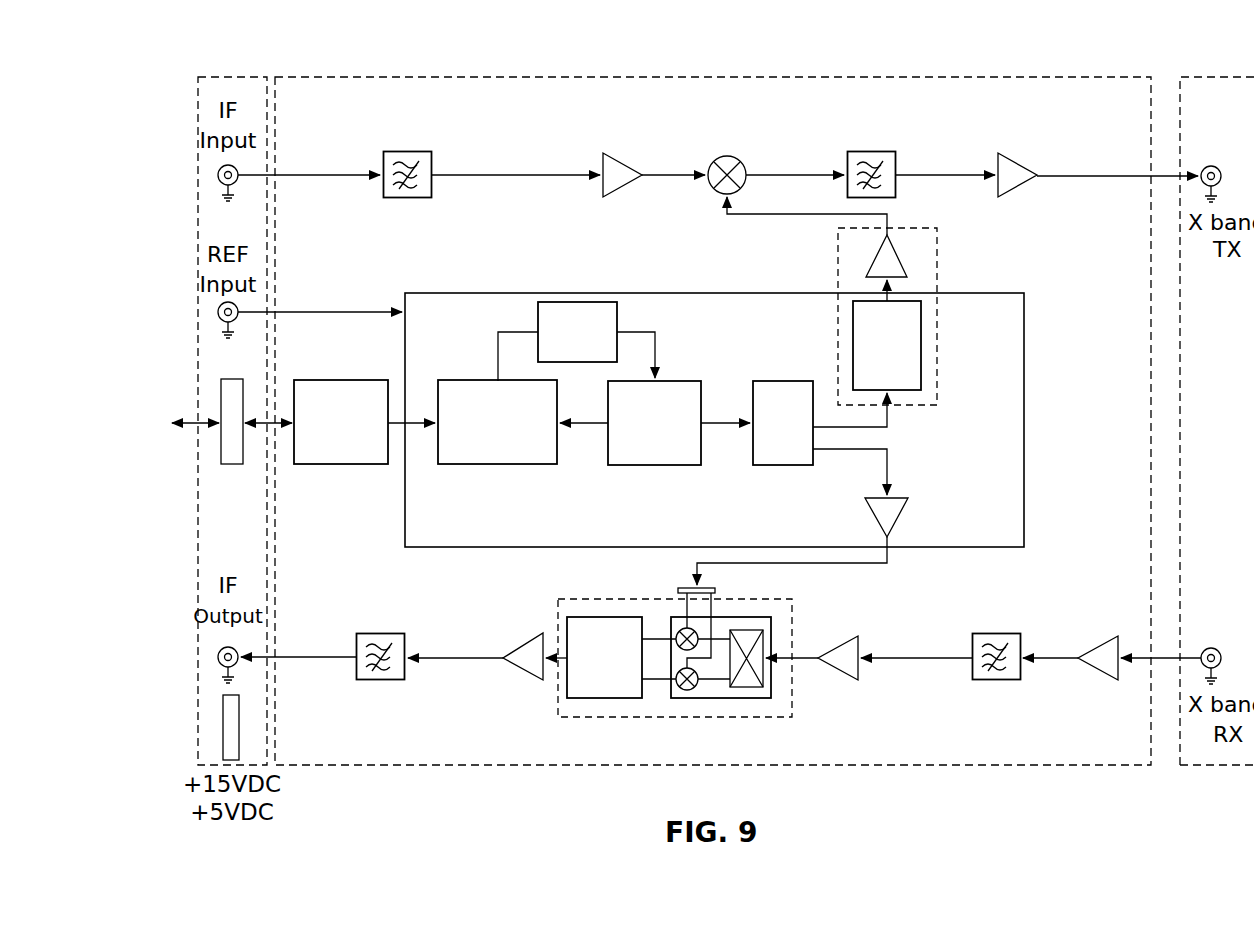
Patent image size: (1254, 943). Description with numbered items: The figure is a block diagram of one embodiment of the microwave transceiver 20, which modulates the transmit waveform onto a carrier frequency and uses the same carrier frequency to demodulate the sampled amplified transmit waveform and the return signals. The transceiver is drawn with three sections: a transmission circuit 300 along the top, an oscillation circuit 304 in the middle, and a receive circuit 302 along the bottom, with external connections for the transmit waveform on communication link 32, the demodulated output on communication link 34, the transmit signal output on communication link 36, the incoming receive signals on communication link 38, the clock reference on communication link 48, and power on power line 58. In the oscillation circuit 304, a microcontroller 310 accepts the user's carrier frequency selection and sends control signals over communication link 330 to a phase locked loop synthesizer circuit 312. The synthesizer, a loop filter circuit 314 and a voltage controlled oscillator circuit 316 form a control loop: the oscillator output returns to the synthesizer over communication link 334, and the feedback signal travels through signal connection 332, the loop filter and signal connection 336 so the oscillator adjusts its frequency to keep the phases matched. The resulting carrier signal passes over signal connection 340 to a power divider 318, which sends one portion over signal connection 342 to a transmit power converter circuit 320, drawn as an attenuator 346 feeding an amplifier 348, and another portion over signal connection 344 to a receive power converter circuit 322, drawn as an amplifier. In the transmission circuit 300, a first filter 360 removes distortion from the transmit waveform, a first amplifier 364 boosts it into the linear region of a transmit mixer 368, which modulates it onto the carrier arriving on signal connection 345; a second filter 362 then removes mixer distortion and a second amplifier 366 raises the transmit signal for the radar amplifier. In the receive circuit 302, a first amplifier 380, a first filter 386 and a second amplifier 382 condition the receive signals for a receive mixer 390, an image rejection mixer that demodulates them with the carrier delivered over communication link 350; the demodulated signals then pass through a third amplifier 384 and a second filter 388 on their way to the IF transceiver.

The microwave transceiver 20 is at (914, 56).
The communication link 32 is at (218, 172).
The communication link 34 is at (218, 654).
The communication link 36 is at (1213, 165).
The communication link 38 is at (1213, 648).
The communication link 48 is at (218, 309).
The power line 58 is at (223, 715).
The transmission circuit 300 is at (467, 128).
The receive circuit 302 is at (919, 683).
The oscillation circuit 304 is at (461, 292).
The microcontroller 310 is at (350, 380).
The phase locked loop synthesizer circuit 312 is at (480, 380).
The loop filter circuit 314 is at (584, 300).
The voltage controlled oscillator circuit 316 is at (664, 467).
The power divider 318 is at (785, 381).
The transmit power converter circuit 320 is at (945, 290).
The receive power converter circuit 322 is at (895, 500).
The communication link 330 is at (405, 430).
The signal connection 332 is at (515, 332).
The communication link 334 is at (585, 428).
The signal connection 336 is at (640, 332).
The signal connection 340 is at (726, 428).
The signal connection 342 is at (893, 415).
The signal connection 344 is at (855, 449).
The signal connection 345 is at (770, 214).
The attenuator 346 is at (921, 360).
The amplifier 348 is at (905, 270).
The communication link 350 is at (858, 565).
The first filter 360 is at (398, 151).
The second filter 362 is at (885, 151).
The first amplifier 364 is at (623, 160).
The second amplifier 366 is at (1018, 162).
The transmit mixer 368 is at (727, 160).
The first amplifier 380 is at (1098, 640).
The second amplifier 382 is at (838, 640).
The third amplifier 384 is at (520, 640).
The first filter 386 is at (985, 633).
The second filter 388 is at (372, 633).
The receive mixer 390 is at (595, 718).